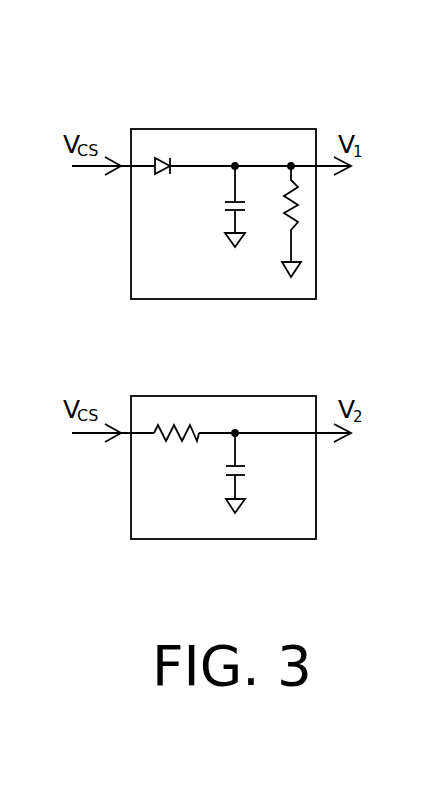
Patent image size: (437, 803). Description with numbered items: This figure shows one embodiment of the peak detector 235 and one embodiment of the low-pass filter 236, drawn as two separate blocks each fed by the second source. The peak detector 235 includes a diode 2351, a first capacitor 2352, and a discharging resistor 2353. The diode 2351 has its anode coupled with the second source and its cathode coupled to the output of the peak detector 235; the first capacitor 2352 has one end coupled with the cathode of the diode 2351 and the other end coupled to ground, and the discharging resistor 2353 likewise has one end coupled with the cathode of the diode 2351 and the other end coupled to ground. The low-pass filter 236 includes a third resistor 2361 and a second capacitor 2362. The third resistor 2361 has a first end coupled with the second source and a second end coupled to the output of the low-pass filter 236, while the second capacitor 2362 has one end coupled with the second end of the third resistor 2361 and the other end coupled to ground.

The peak detector 235 is at (217, 129).
The diode 2351 is at (165, 178).
The first capacitor 2352 is at (223, 203).
The discharging resistor 2353 is at (277, 208).
The low-pass filter 236 is at (216, 396).
The third resistor 2361 is at (182, 440).
The second capacitor 2362 is at (247, 471).